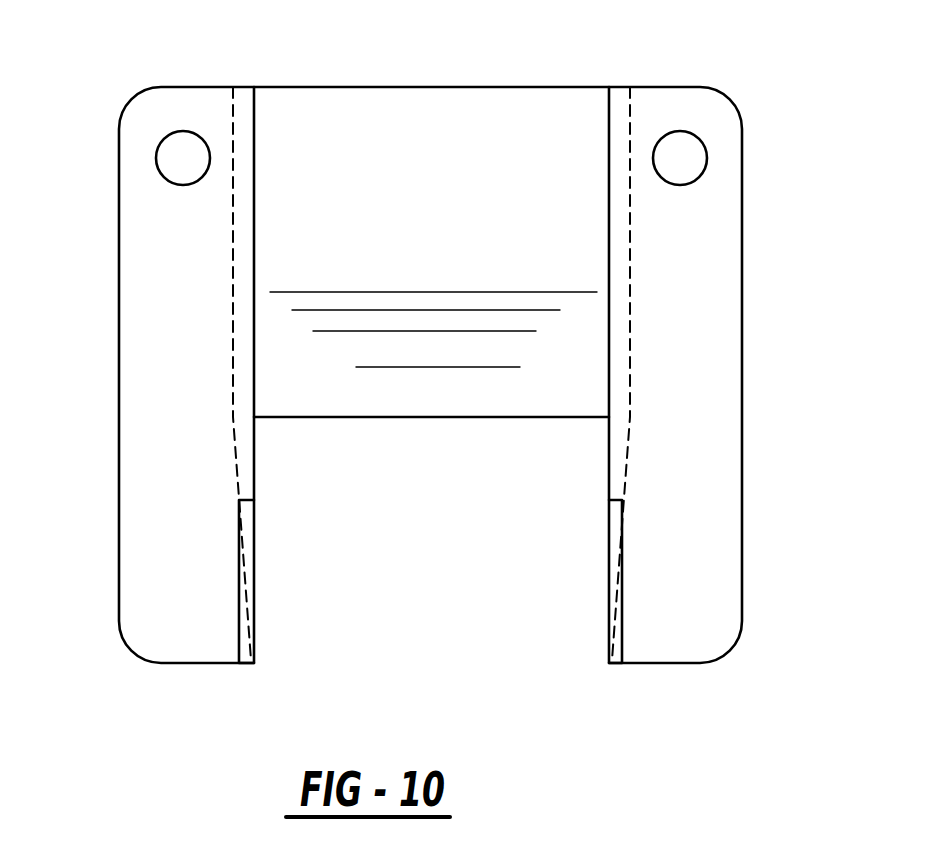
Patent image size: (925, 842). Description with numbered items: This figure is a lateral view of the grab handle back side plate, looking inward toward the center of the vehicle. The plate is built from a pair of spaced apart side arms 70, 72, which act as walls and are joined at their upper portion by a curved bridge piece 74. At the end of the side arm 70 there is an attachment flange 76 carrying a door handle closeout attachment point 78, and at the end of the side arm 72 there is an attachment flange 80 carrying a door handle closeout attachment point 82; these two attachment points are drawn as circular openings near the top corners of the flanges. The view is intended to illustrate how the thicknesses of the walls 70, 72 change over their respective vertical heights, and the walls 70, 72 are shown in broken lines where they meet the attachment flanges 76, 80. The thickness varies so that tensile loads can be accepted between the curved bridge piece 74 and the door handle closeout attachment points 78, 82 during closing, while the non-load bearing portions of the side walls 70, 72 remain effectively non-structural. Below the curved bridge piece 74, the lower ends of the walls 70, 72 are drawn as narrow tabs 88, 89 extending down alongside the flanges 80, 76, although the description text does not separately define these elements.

The side arm 70 is at (617, 420).
The side arm 72 is at (240, 428).
The curved bridge piece 74 is at (430, 127).
The attachment flange 76 is at (718, 281).
The door handle closeout attachment point 78 is at (690, 163).
The attachment flange 80 is at (152, 298).
The door handle closeout attachment point 82 is at (183, 157).
The right tab 88 is at (614, 652).
The left tab 89 is at (243, 645).